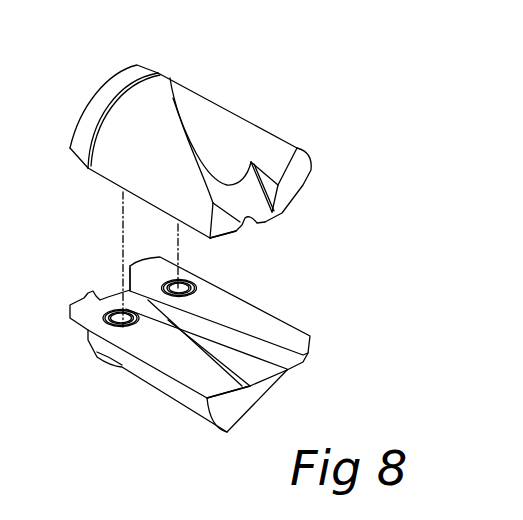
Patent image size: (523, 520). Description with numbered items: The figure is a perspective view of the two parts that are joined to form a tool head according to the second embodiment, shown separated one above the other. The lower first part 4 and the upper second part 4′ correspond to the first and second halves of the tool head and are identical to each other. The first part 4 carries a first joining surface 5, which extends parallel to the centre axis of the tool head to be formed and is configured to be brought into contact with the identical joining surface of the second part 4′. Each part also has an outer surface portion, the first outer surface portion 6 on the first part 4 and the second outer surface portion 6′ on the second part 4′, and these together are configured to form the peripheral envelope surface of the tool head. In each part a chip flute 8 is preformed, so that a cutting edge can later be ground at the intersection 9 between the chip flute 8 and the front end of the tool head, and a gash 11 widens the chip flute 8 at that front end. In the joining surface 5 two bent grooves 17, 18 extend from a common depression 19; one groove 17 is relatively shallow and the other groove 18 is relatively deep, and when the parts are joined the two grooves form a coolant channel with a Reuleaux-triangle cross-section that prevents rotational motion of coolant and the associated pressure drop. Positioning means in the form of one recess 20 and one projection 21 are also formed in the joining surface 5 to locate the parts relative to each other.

The second part 4′ is at (243, 95).
The second outer surface portion 6′ is at (151, 132).
The chip flute 8 is at (268, 146).
The intersection 9 is at (290, 167).
The gash 11 is at (226, 194).
The first part 4 is at (310, 305).
The first joining surface 5 is at (177, 358).
The first outer surface portion 6 is at (178, 388).
The groove 17 is at (243, 380).
The groove 18 is at (285, 357).
The common depression 19 is at (130, 290).
The recess 20 is at (115, 309).
The projection 21 is at (182, 282).